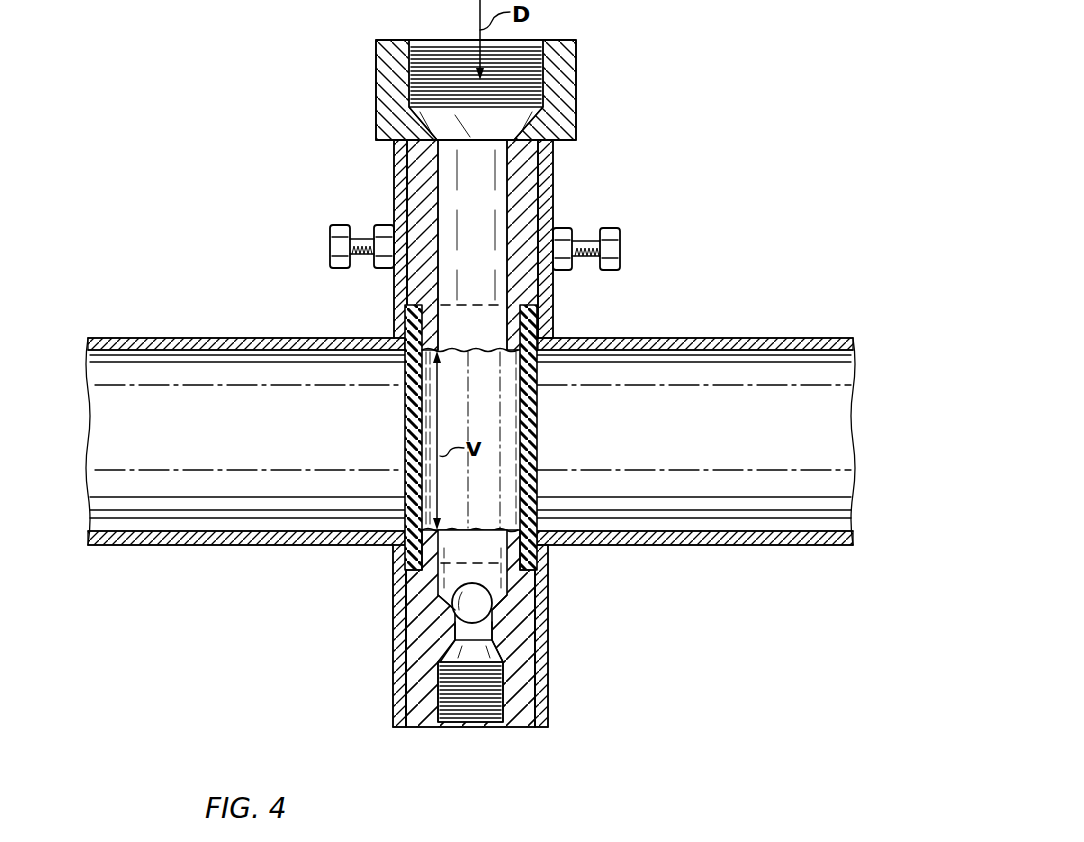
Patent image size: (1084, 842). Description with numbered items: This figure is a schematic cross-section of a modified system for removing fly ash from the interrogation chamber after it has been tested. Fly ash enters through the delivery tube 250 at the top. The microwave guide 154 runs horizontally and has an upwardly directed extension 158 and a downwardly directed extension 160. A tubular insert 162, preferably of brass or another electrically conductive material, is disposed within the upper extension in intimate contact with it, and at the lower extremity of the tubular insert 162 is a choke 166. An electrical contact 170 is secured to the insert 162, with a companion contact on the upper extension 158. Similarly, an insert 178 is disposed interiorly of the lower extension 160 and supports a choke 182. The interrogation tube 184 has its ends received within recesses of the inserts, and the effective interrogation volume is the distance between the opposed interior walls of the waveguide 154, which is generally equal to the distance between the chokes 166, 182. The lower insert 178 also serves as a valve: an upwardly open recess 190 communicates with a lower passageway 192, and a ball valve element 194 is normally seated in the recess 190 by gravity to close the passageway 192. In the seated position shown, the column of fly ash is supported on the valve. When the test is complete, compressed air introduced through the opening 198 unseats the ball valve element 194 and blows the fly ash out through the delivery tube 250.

The microwave guide 154 is at (188, 546).
The upper extension 158 is at (395, 306).
The lower extension 160 is at (396, 634).
The tubular insert 162 is at (392, 170).
The choke 166 is at (488, 341).
The electrical contact 170 is at (359, 237).
The insert 178 is at (515, 628).
The choke 182 is at (494, 523).
The interrogation tube 184 is at (543, 435).
The upwardly open recess 190 is at (508, 592).
The lower passageway 192 is at (452, 643).
The ball valve element 194 is at (454, 604).
The opening 198 is at (487, 722).
The delivery tube 250 is at (582, 91).